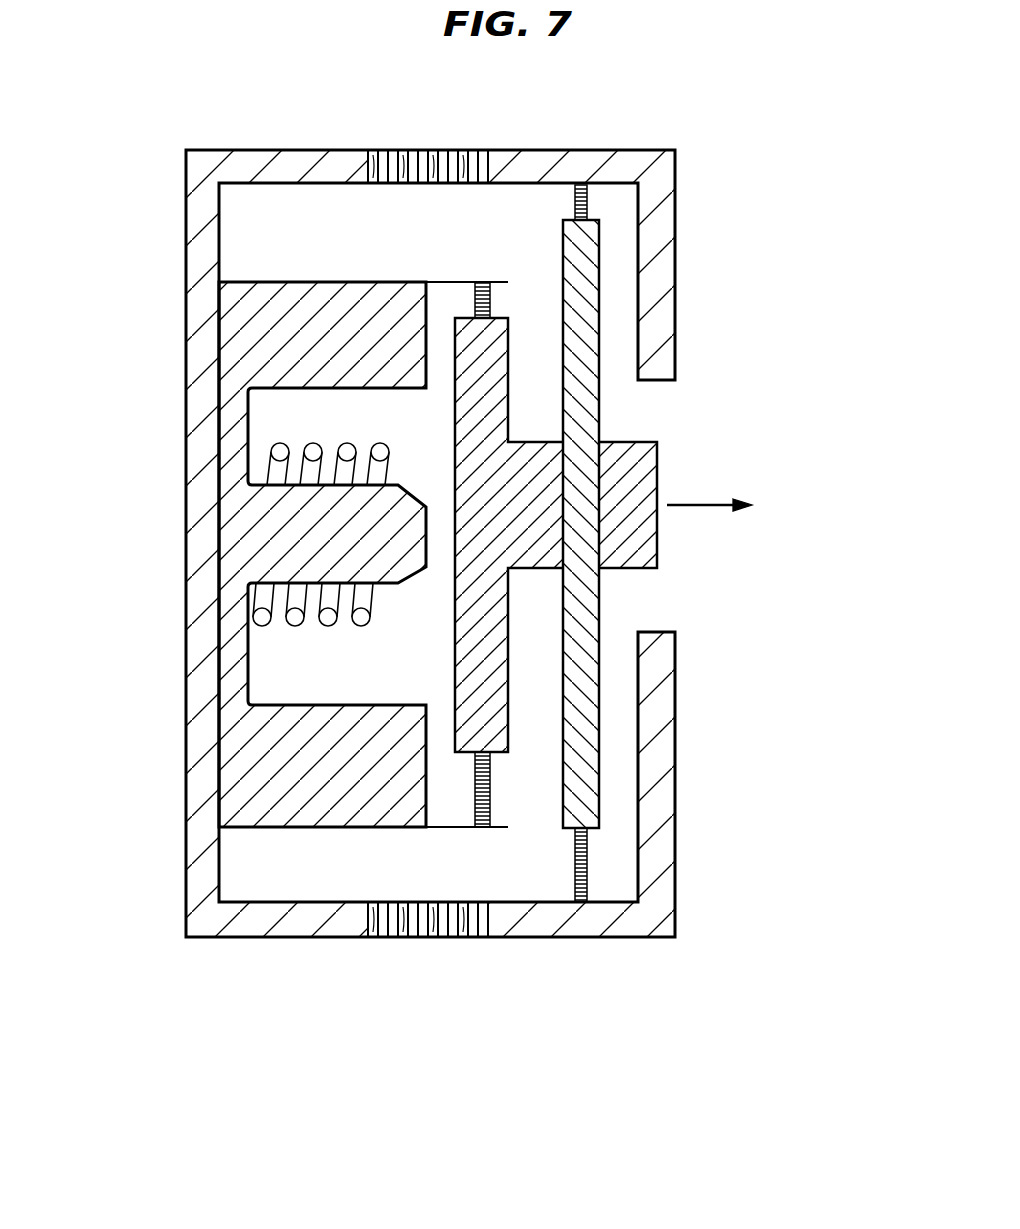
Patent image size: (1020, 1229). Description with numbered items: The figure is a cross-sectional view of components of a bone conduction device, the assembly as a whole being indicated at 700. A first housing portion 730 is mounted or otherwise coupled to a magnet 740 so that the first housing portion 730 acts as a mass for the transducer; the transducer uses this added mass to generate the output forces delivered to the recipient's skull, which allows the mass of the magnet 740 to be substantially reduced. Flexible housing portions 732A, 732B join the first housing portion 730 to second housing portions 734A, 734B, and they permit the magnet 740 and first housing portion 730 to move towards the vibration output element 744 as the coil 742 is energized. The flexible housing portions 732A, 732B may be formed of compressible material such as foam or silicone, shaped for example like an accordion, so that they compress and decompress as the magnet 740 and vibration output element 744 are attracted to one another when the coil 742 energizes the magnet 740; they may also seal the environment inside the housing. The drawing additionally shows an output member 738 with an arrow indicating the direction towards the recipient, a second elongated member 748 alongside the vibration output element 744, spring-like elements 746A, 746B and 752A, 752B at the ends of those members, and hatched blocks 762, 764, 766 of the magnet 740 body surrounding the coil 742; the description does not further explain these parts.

The actuator assembly 700 is at (138, 985).
The first housing portion 730 is at (186, 447).
The flexible housing portion 732A is at (432, 150).
The flexible housing portion 732B is at (435, 937).
The second housing portion 734A is at (674, 282).
The second housing portion 734B is at (674, 791).
The output member 738 is at (695, 507).
The magnet 740 is at (219, 658).
The coil 742 is at (280, 446).
The vibration output element 744 is at (455, 660).
The upper spring 746A is at (490, 304).
The lower spring 746B is at (490, 814).
The second piston 748 is at (600, 428).
The upper return spring 752A is at (574, 195).
The lower return spring 752B is at (574, 896).
The lower block 762 is at (337, 830).
The upper block 764 is at (334, 282).
The middle block 766 is at (406, 485).